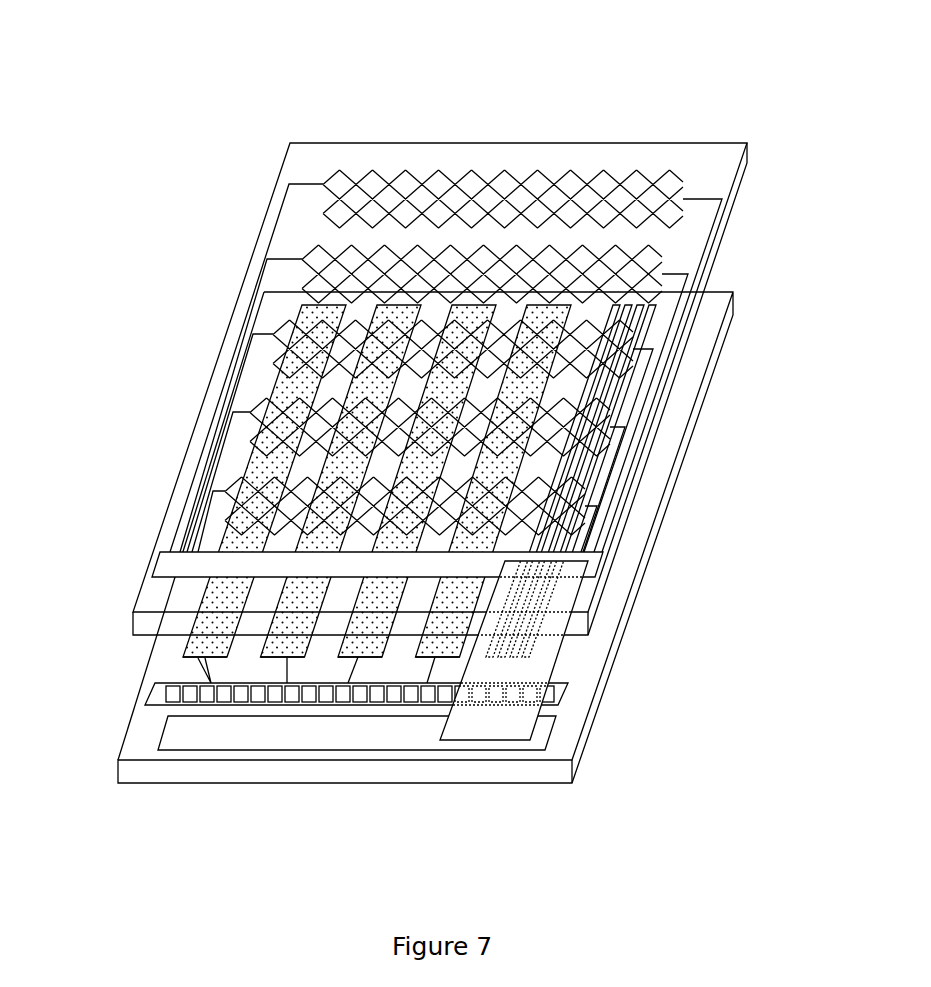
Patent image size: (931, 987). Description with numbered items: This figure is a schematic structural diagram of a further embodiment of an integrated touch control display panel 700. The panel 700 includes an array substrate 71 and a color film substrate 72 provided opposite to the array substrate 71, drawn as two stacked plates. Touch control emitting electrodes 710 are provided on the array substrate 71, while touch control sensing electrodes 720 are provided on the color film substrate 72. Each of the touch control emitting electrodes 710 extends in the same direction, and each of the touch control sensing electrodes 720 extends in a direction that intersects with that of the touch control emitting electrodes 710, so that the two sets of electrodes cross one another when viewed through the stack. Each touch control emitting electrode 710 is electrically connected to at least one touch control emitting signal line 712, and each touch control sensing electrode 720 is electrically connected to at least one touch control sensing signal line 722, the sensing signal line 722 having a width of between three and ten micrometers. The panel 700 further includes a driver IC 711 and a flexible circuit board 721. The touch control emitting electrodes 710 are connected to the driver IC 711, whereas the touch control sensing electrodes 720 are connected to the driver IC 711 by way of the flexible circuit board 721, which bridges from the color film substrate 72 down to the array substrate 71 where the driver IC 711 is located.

The integrated touch control display panel 700 is at (792, 33).
The array substrate 71 is at (434, 537).
The color film substrate 72 is at (484, 375).
The touch control emitting electrode 710 is at (186, 643).
The driver IC 711 is at (348, 781).
The touch control emitting signal line 712 is at (200, 669).
The touch control sensing electrode 720 is at (548, 180).
The flexible circuit board 721 is at (394, 575).
The touch control sensing signal line 722 is at (359, 481).